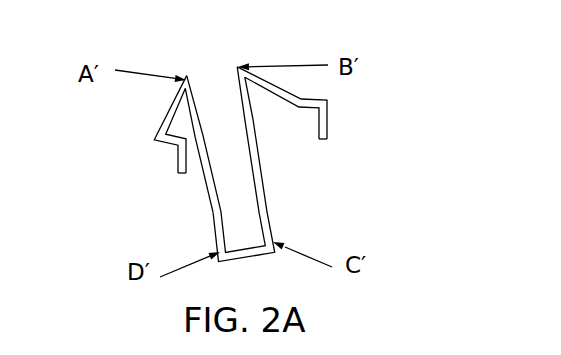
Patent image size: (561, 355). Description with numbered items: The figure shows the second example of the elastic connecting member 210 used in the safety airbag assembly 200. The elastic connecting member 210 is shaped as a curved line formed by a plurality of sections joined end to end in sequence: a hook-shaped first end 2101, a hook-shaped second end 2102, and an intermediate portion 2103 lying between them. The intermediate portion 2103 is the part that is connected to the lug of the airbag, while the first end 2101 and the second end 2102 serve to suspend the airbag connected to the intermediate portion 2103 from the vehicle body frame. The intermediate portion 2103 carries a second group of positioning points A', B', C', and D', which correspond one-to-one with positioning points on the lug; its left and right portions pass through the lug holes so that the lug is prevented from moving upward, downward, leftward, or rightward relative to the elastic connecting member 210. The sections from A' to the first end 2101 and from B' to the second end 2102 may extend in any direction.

The safety airbag assembly 200 is at (325, 40).
The elastic connecting member 210 is at (263, 177).
The hook-shaped first end 2101 is at (178, 152).
The hook-shaped second end 2102 is at (327, 123).
The intermediate portion 2103 is at (207, 163).